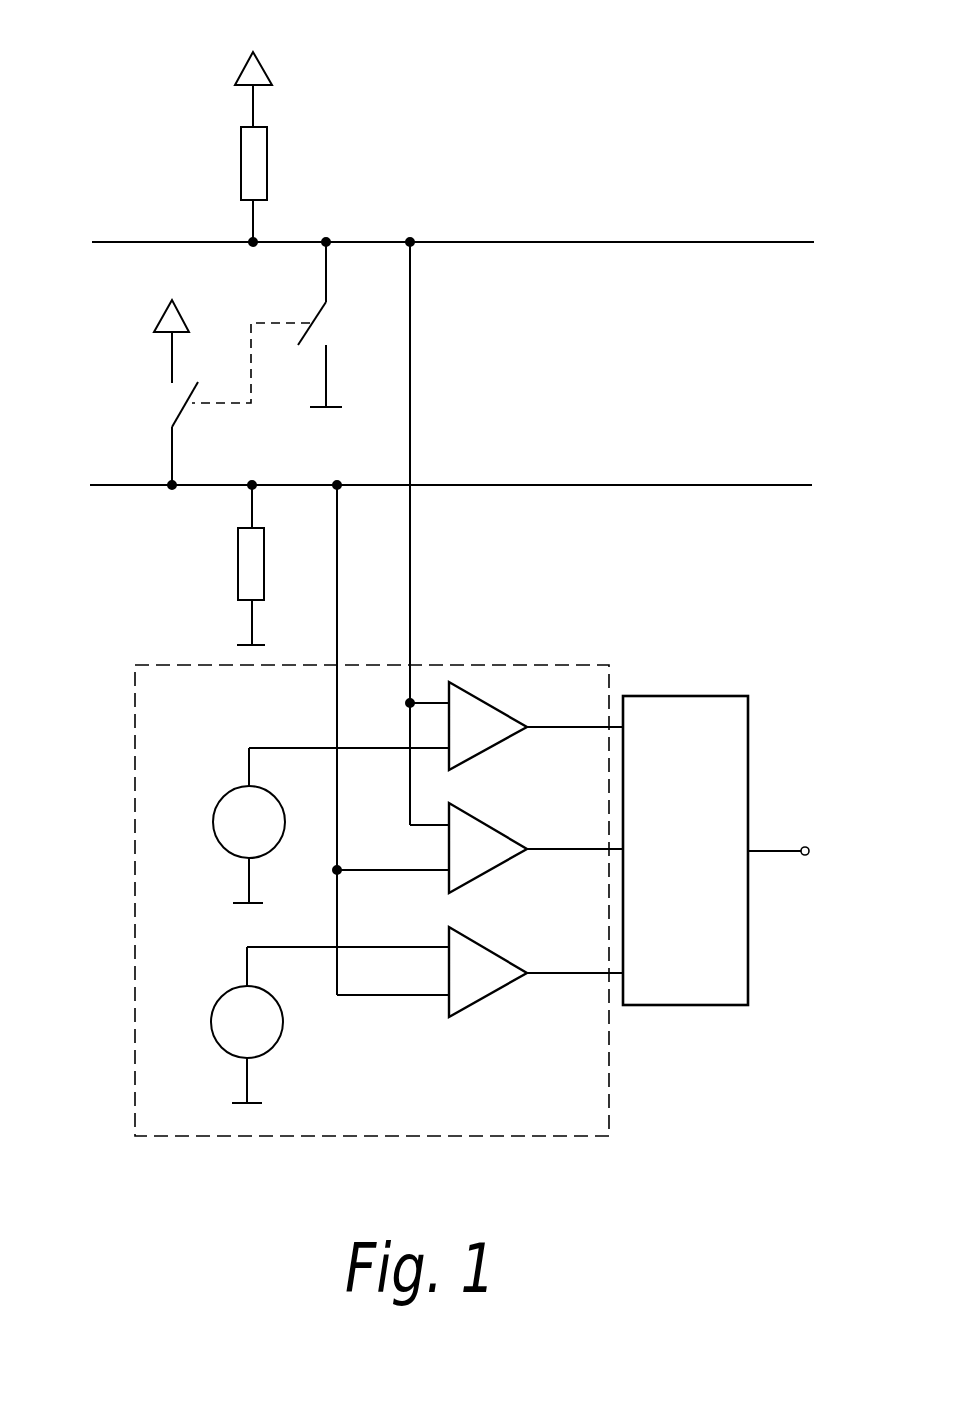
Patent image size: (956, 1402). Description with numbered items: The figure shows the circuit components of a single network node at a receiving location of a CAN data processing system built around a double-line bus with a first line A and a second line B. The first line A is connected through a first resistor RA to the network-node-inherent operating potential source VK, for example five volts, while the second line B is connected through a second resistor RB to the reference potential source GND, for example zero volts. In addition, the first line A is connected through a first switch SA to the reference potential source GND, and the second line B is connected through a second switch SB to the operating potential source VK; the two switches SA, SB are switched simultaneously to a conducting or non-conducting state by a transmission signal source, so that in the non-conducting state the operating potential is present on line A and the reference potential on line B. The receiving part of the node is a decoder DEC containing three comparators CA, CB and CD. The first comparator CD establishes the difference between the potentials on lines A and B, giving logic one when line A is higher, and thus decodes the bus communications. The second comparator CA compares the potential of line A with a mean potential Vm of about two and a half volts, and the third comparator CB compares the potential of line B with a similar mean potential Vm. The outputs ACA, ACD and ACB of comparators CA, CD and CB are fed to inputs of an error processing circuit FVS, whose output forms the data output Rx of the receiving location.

The first line A is at (464, 525).
The second line B is at (463, 733).
The first resistor RA is at (236, 147).
The second resistor RB is at (232, 565).
The first switch SA is at (277, 324).
The second switch SB is at (164, 433).
The operating potential source VK is at (225, 195).
The reference potential source GND is at (241, 526).
The decoder DEC is at (372, 900).
The mean potential Vm is at (304, 925).
The second comparator CA is at (488, 726).
The first comparator CD is at (488, 848).
The third comparator CB is at (488, 972).
The output of comparator CA ACA is at (575, 711).
The output of comparator CD ACD is at (575, 832).
The output of comparator CB ACB is at (575, 956).
The error processing circuit FVS is at (685, 850).
The data output Rx is at (797, 852).